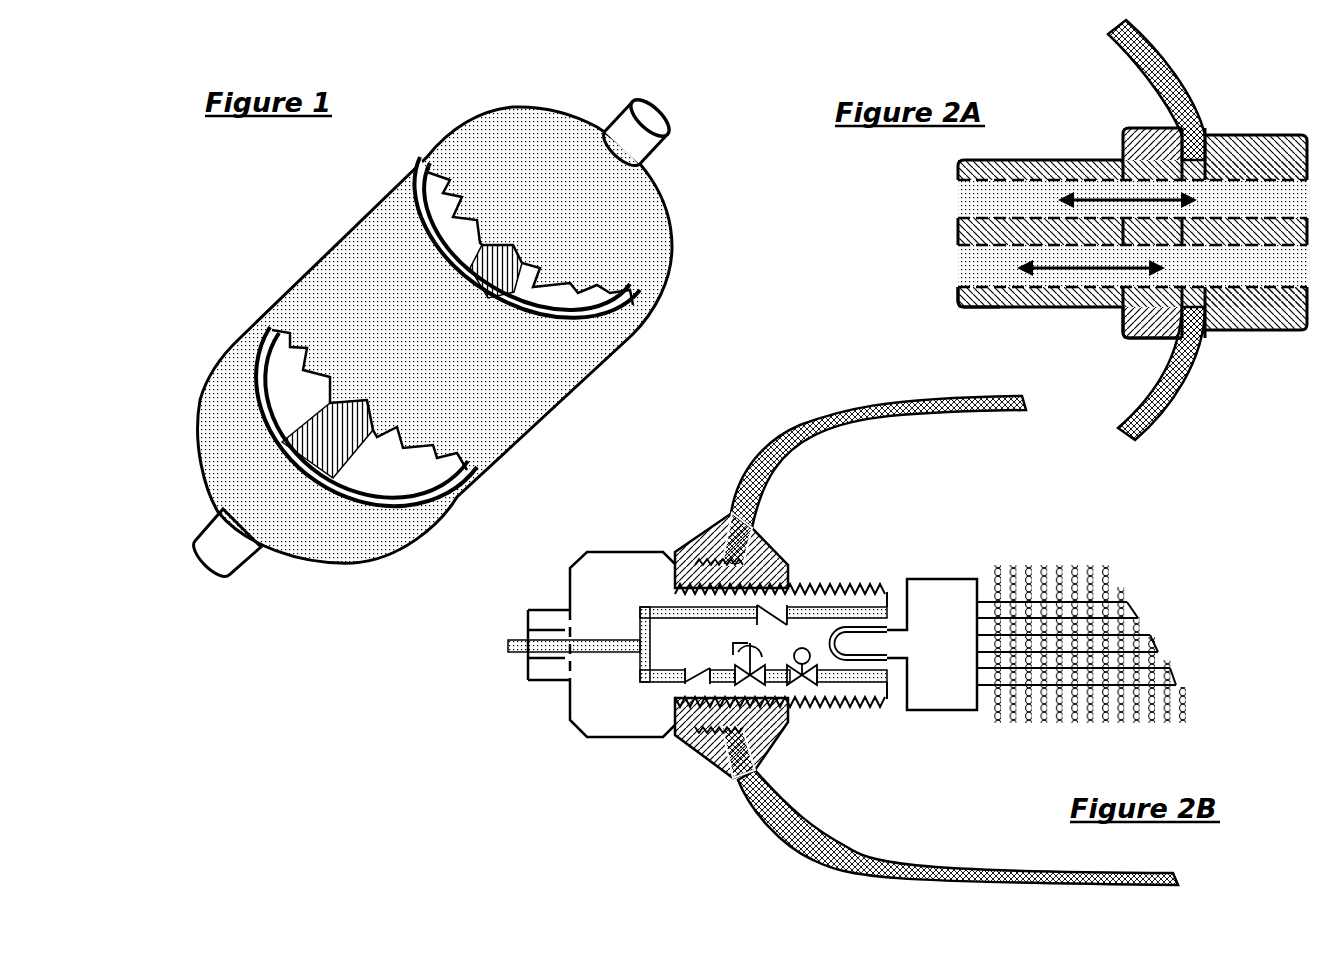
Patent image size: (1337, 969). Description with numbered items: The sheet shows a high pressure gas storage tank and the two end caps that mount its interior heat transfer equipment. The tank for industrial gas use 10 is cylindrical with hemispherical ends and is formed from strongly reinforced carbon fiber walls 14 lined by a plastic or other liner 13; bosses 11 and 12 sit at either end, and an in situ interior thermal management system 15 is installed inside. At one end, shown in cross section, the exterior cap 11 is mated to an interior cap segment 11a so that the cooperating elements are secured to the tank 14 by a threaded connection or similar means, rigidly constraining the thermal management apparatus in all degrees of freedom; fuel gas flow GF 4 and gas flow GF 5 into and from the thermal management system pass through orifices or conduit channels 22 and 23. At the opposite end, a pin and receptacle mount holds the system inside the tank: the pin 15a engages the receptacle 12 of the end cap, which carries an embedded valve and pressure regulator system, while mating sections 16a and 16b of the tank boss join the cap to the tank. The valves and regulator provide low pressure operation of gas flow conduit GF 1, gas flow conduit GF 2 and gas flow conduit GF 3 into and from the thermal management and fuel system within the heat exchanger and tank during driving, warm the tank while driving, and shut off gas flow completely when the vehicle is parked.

In FIG. 1, the high pressure storage tank 10 is at (458, 344).
In FIG. 1, the boss / exterior cap 11 is at (670, 108).
In FIG. 2A, the boss / exterior cap 11 is at (1230, 134).
In FIG. 2A, the interior cap segment 11a is at (1130, 338).
In FIG. 1, the boss / receptacle 12 is at (223, 553).
In FIG. 2B, the boss / receptacle 12 is at (633, 735).
In FIG. 1, the liner 13 is at (620, 333).
In FIG. 1, the carbon fiber walls / tank 14 is at (547, 410).
In FIG. 2A, the carbon fiber walls / tank 14 is at (1143, 433).
In FIG. 2B, the carbon fiber walls / tank 14 is at (828, 432).
In FIG. 1, the interior thermal management system 15 is at (337, 431).
In FIG. 2B, the interior thermal management system 15 is at (1048, 717).
In FIG. 2B, the pin 15a is at (942, 642).
In FIG. 2B, the mating section of tank boss 16a is at (775, 737).
In FIG. 2B, the mating section of tank boss 16b is at (698, 535).
In FIG. 2A, the orifice / conduit channel 22 is at (1263, 177).
In FIG. 2A, the orifice / conduit channel 23 is at (975, 290).
In FIG. 2B, the gas flow conduit GF 1 is at (507, 643).
In FIG. 2B, the gas flow conduit GF 2 is at (888, 677).
In FIG. 2B, the gas flow conduit GF 3 is at (888, 610).
In FIG. 2A, the fuel gas flow GF 4 is at (1118, 178).
In FIG. 2A, the gas flow GF 5 is at (1087, 290).